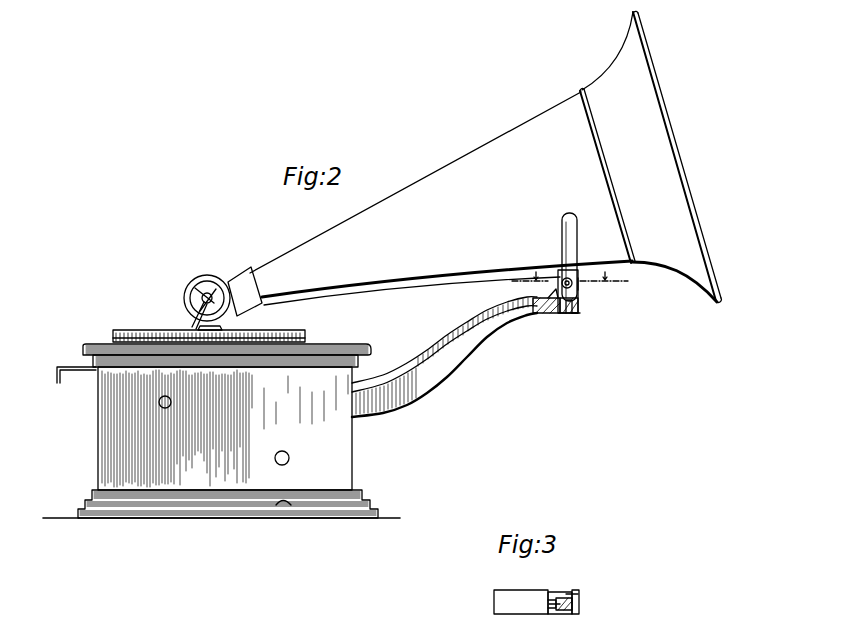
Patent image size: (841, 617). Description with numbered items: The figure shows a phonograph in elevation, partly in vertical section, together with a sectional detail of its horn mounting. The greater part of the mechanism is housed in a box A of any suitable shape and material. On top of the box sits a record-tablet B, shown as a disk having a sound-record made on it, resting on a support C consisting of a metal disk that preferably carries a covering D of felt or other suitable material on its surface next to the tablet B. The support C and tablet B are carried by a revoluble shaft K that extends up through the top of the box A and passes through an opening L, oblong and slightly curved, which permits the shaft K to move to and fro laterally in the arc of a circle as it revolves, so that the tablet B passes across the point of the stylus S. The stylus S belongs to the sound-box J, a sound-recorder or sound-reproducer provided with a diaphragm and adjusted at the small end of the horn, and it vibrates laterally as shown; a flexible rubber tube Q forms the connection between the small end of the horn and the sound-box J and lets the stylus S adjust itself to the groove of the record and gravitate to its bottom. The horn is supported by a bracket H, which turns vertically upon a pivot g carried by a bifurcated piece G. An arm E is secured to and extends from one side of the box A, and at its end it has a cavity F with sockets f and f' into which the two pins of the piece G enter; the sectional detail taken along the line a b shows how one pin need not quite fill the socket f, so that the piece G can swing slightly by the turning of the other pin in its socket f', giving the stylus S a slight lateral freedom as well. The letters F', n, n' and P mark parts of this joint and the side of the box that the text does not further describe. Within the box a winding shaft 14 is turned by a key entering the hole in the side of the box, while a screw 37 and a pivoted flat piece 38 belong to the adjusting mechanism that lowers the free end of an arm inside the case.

In FIG. 2, the box A is at (221, 442).
In FIG. 2, the record-tablet B is at (298, 334).
In FIG. 2, the support for the record-tablet C is at (114, 344).
In FIG. 2, the covering D is at (306, 338).
In FIG. 2, the arm E is at (452, 379).
In FIG. 3, the arm E is at (494, 597).
In FIG. 3, the cavity F is at (565, 587).
In FIG. 2, the coupling sleeve F' is at (561, 321).
In FIG. 2, the bifurcated piece G is at (576, 291).
In FIG. 3, the bifurcated piece G is at (580, 598).
In FIG. 2, the bracket H is at (578, 241).
In FIG. 3, the bracket H is at (580, 603).
In FIG. 2, the sound-box J is at (210, 276).
In FIG. 2, the revoluble shaft K is at (212, 330).
In FIG. 2, the opening L is at (430, 176).
In FIG. 2, the winding crank P is at (57, 367).
In FIG. 2, the rubber tube Q is at (244, 268).
In FIG. 2, the stylus S is at (194, 326).
In FIG. 2, the section line ab a is at (524, 282).
In FIG. 2, the section line ab b is at (609, 283).
In FIG. 2, the socket f is at (539, 320).
In FIG. 3, the socket f is at (551, 586).
In FIG. 2, the socket f' is at (577, 322).
In FIG. 2, the pivot g is at (577, 284).
In FIG. 3, the pivot g is at (574, 592).
In FIG. 2, the joint shoulder n is at (536, 295).
In FIG. 3, the joint shoulder n is at (537, 586).
In FIG. 2, the joint shoulder n' is at (593, 320).
In FIG. 2, the shaft 14 is at (159, 402).
In FIG. 2, the screw 37 is at (289, 457).
In FIG. 2, the flat piece of metal 38 is at (286, 505).